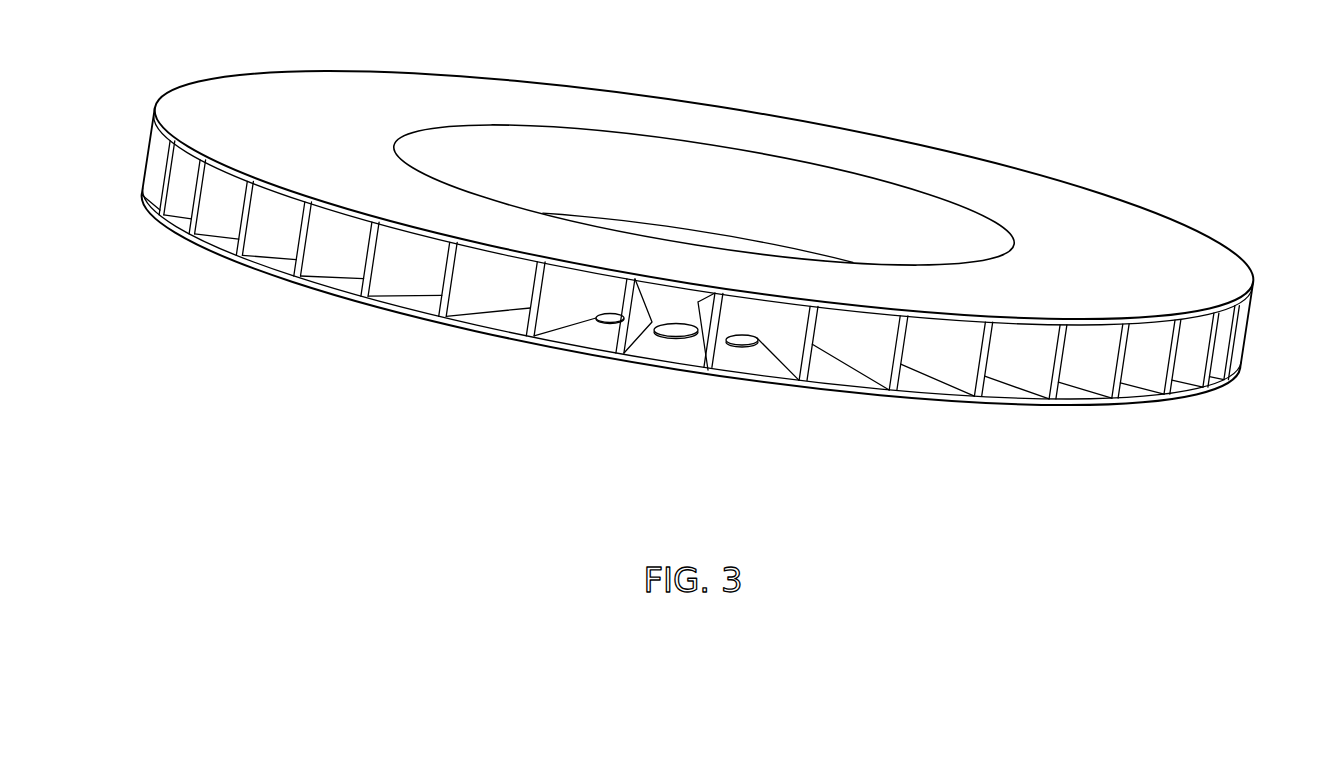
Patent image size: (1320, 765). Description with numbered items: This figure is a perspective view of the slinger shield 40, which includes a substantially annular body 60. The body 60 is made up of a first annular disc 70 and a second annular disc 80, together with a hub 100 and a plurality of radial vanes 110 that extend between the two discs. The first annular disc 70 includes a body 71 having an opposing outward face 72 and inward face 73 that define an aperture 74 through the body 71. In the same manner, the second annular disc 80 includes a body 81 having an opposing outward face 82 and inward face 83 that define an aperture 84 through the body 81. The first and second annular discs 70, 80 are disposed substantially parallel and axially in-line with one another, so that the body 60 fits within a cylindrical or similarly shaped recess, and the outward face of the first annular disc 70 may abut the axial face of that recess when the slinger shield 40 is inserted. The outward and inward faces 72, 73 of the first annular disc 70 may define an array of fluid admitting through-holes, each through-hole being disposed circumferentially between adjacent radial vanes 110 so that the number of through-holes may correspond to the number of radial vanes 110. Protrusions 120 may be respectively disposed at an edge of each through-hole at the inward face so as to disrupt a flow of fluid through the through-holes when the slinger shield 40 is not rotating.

The slinger shield 40 is at (704, 248).
The annular body 60 is at (704, 195).
The first annular disc 70 is at (692, 332).
The body 71 is at (845, 395).
The outward face 72 is at (692, 332).
The inward face 73 is at (770, 375).
The aperture 74 is at (640, 199).
The second annular disc 80 is at (704, 195).
The body 81 is at (697, 238).
The outward face 82 is at (1032, 320).
The inward face 83 is at (1028, 334).
The aperture 84 is at (642, 199).
The hub 100 is at (747, 172).
The radial vanes 110 is at (690, 270).
The protrusions 120 is at (603, 330).